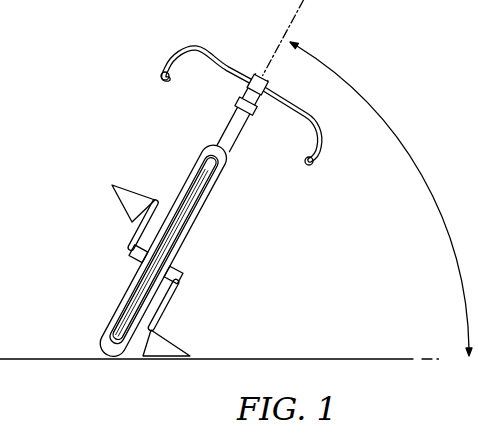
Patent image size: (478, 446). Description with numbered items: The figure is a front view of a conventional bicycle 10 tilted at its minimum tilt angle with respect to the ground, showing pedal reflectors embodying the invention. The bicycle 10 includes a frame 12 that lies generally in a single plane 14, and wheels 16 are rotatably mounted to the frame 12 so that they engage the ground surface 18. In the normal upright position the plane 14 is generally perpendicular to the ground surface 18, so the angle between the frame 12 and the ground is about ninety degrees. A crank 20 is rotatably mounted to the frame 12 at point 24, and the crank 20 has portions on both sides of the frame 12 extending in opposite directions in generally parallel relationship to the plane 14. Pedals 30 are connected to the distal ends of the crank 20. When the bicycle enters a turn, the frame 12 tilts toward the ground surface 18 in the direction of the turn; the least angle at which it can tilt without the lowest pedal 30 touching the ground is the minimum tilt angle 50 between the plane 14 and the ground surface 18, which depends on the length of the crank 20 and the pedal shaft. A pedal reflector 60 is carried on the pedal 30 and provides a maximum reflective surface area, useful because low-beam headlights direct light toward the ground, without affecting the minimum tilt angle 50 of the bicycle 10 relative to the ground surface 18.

The bicycle 10 is at (150, 205).
The frame 12 is at (238, 130).
The plane 14 is at (276, 53).
The wheels 16 is at (118, 343).
The ground surface 18 is at (303, 357).
The crank 20 is at (127, 248).
The point 24 is at (161, 240).
The pedals 30 is at (131, 182).
The minimum tilt angle 50 is at (381, 199).
The pedal reflector 60 is at (126, 207).